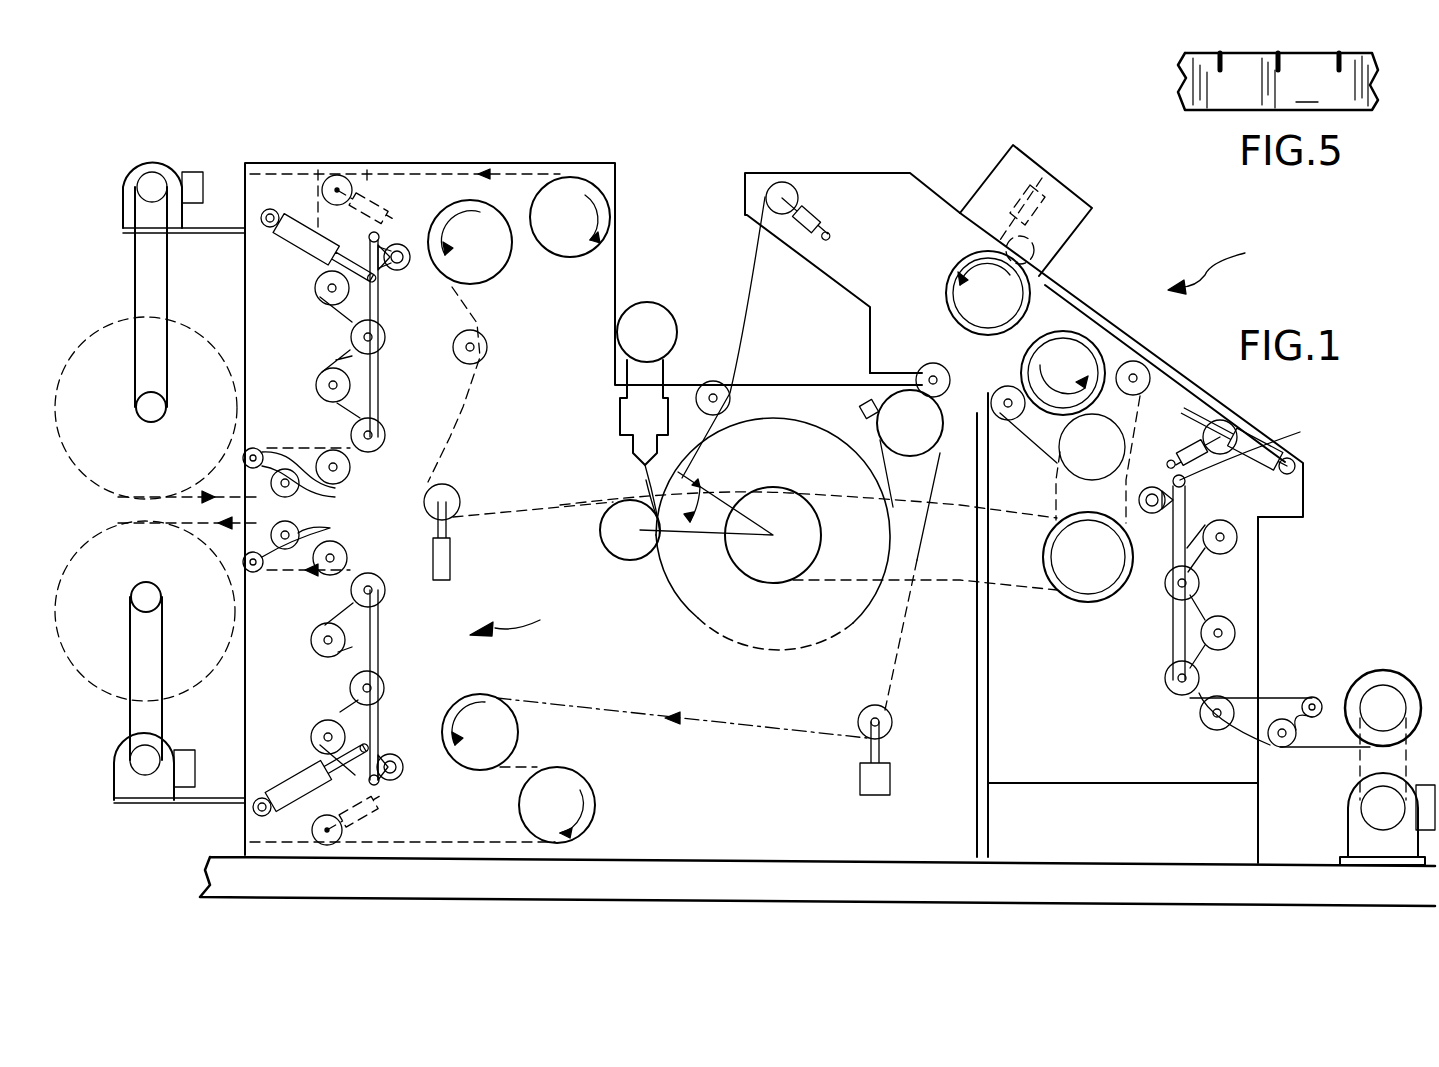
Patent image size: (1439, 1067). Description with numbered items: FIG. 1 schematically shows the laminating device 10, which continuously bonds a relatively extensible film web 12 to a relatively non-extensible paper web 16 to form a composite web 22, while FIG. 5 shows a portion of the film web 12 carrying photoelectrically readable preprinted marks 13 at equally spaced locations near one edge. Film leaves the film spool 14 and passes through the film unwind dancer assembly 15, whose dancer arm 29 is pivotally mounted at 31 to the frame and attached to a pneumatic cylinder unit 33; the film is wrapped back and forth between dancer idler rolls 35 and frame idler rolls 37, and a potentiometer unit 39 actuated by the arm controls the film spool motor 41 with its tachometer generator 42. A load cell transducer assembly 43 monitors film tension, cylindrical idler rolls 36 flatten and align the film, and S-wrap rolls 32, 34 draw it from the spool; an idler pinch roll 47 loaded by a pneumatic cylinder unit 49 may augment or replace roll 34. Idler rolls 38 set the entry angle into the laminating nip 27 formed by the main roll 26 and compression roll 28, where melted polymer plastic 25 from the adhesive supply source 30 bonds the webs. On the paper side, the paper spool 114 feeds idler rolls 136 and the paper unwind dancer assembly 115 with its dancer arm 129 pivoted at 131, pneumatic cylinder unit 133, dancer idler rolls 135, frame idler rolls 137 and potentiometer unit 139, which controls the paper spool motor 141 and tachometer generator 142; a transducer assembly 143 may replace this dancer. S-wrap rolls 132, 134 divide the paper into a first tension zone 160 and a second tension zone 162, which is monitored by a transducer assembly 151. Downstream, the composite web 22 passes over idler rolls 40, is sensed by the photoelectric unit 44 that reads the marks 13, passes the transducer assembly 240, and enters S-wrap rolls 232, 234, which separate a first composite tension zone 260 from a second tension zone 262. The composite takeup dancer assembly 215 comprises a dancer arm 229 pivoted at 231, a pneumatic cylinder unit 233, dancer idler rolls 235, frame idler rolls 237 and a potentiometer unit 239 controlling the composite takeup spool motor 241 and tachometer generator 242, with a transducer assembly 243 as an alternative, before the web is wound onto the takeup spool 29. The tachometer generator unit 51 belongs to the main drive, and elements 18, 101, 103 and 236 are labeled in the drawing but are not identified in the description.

In FIG. 1, the laminating device 10 is at (1223, 267).
In FIG. 1, the film web 12 is at (748, 277).
In FIG. 5, the film web 12 is at (1278, 81).
In FIG. 5, the preprinted marks 13 is at (1221, 52).
In FIG. 1, the film spool 14 is at (1377, 670).
In FIG. 1, the film unwind dancer assembly 15 is at (1262, 580).
In FIG. 1, the paper web 16 is at (472, 500).
In FIG. 1, the supply belt 18 is at (165, 283).
In FIG. 1, the composite web 22 is at (930, 530).
In FIG. 1, the melted polymer plastic 25 is at (640, 470).
In FIG. 1, the main roll 26 is at (715, 630).
In FIG. 1, the laminating nip 27 is at (652, 503).
In FIG. 1, the compression roll 28 is at (605, 548).
In FIG. 1, the composite takeup spool 29 is at (130, 522).
In FIG. 1, the adhesive supply source 30 is at (665, 375).
In FIG. 1, the pivotal mount 31 is at (1242, 456).
In FIG. 1, the upstream S-wrap roll 32 is at (1033, 290).
In FIG. 1, the pneumatic cylinder unit 33 is at (1268, 475).
In FIG. 1, the downstream S-wrap roll 34 is at (1100, 352).
In FIG. 1, the dancer idler rolls 35 is at (1165, 590).
In FIG. 1, the cylindrical idler rolls 36 is at (1272, 745).
In FIG. 1, the frame idler rolls 37 is at (1237, 540).
In FIG. 1, the idler rolls 38 is at (730, 397).
In FIG. 1, the potentiometer unit 39 is at (1138, 500).
In FIG. 1, the idler rolls 40 is at (930, 455).
In FIG. 1, the film spool motor 41 is at (1348, 830).
In FIG. 1, the tachometer generator 42 is at (1425, 785).
In FIG. 1, the idler roll and load cell transducer assembly 43 is at (1238, 425).
In FIG. 1, the photoelectric unit 44 is at (860, 412).
In FIG. 1, the idler pinch roll 47 is at (1035, 255).
In FIG. 1, the pneumatic cylinder unit 49 is at (1050, 192).
In FIG. 1, the tachometer generator unit 51 is at (788, 185).
In FIG. 1, the roller 101 is at (858, 356).
In FIG. 1, the roller 103 is at (925, 365).
In FIG. 1, the paper spool 114 is at (110, 330).
In FIG. 1, the paper unwind dancer assembly 115 is at (397, 194).
In FIG. 1, the dancer arm 129 is at (380, 302).
In FIG. 1, the pivotal mount 131 is at (380, 233).
In FIG. 1, the upstream S-wrap roll 132 is at (612, 217).
In FIG. 1, the pneumatic cylinder unit 133 is at (292, 208).
In FIG. 1, the downstream S-wrap roll 134 is at (485, 265).
In FIG. 1, the dancer idler rolls 135 is at (351, 338).
In FIG. 1, the cylindrical idler rolls 136 is at (345, 486).
In FIG. 1, the frame idler rolls 137 is at (318, 295).
In FIG. 1, the potentiometer unit 139 is at (407, 246).
In FIG. 1, the paper spool motor 141 is at (150, 160).
In FIG. 1, the tachometer generator 142 is at (195, 172).
In FIG. 1, the idler roll and load cell transducer assembly 143 is at (365, 183).
In FIG. 1, the idler roll and tension transducer assembly 151 is at (450, 486).
In FIG. 1, the first paper web tension zone 160 is at (522, 165).
In FIG. 1, the second paper web tension zone 162 is at (468, 406).
In FIG. 1, the composite takeup dancer assembly 215 is at (522, 622).
In FIG. 1, the dancer arm 229 is at (380, 640).
In FIG. 1, the pivotal mount 231 is at (380, 782).
In FIG. 1, the upstream S-wrap roll 232 is at (518, 732).
In FIG. 1, the pneumatic cylinder unit 233 is at (292, 785).
In FIG. 1, the downstream S-wrap roll 234 is at (595, 805).
In FIG. 1, the dancer idler rolls 235 is at (386, 593).
In FIG. 1, the roller assembly 236 is at (332, 528).
In FIG. 1, the frame idler rolls 237 is at (318, 625).
In FIG. 1, the potentiometer unit 239 is at (396, 753).
In FIG. 1, the idler roll and tension transducer assembly 240 is at (892, 730).
In FIG. 1, the composite takeup spool motor 241 is at (115, 760).
In FIG. 1, the tachometer generator 242 is at (175, 750).
In FIG. 1, the idler roll and load cell transducer assembly 243 is at (385, 832).
In FIG. 1, the first composite tension zone 260 is at (688, 722).
In FIG. 1, the second composite tension zone 262 is at (483, 842).